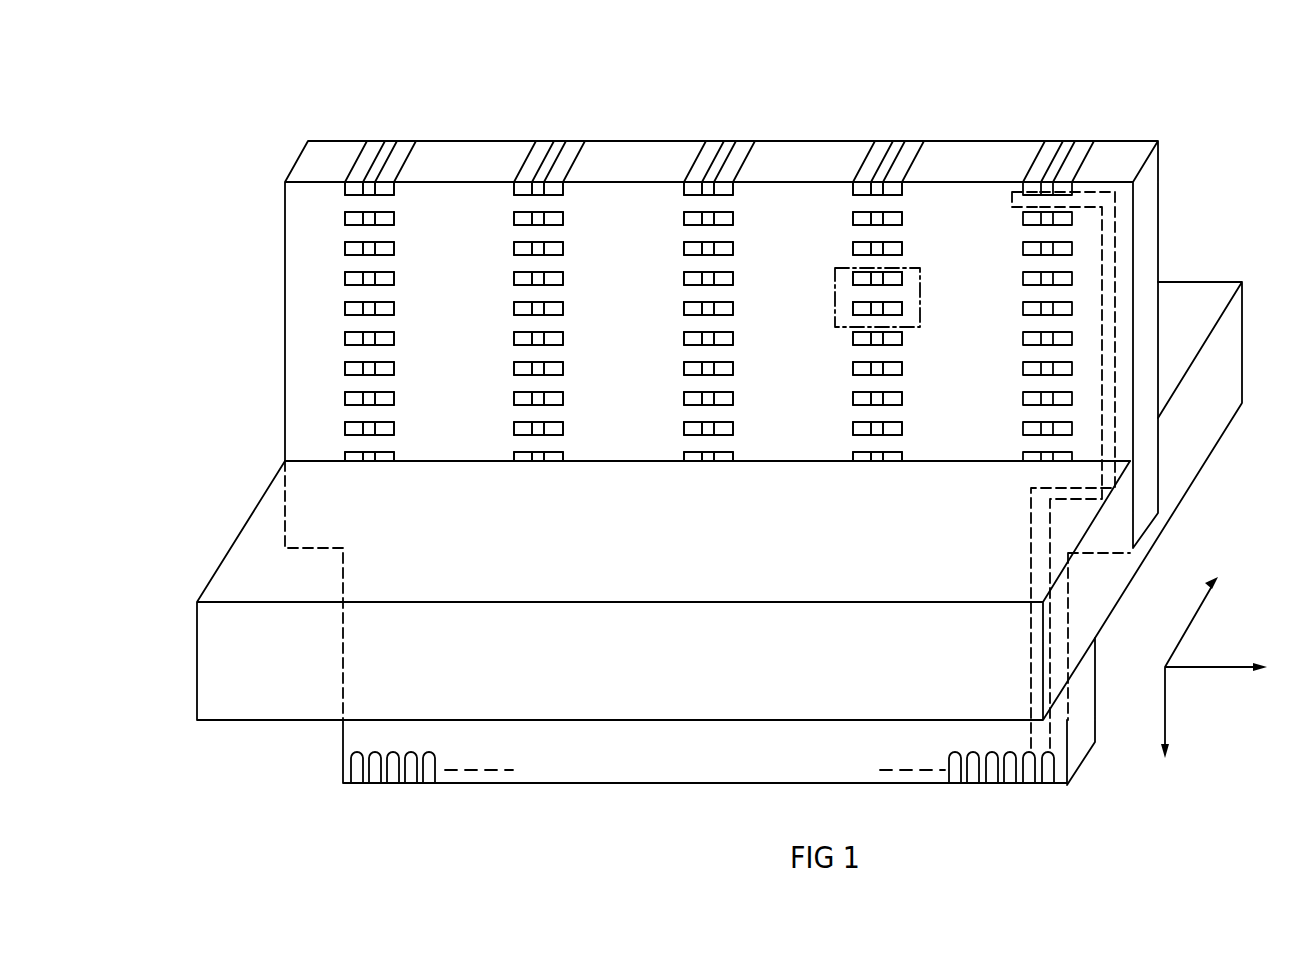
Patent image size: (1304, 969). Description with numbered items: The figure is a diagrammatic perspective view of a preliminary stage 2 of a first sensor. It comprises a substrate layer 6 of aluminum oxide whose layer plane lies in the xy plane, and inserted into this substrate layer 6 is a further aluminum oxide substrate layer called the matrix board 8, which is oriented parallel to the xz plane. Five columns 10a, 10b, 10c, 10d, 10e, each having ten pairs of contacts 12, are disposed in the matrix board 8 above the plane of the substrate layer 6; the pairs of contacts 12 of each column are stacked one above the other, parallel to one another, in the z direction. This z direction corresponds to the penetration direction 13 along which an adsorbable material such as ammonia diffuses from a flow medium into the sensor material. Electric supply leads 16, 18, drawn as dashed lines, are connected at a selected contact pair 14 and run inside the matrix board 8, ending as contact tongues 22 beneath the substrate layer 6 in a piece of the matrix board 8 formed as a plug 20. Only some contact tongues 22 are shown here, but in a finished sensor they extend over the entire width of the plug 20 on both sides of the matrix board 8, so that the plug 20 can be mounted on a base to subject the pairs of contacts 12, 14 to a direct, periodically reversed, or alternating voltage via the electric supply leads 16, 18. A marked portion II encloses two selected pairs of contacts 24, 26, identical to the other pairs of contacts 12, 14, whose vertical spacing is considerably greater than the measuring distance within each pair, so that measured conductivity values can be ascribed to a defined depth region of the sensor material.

The preliminary stage 2 is at (276, 239).
The substrate layer 6 is at (243, 577).
The matrix board 8 is at (310, 327).
The column 10a is at (396, 128).
The column 10b is at (560, 128).
The column 10c is at (730, 128).
The column 10d is at (900, 128).
The column 10e is at (1073, 128).
The pairs of contacts 12 is at (514, 278).
The penetration direction 13 is at (1167, 698).
The selected contact pair 14 is at (1031, 194).
The electric supply lead 16 is at (1104, 227).
The electric supply lead 18 is at (1116, 253).
The plug 20 is at (610, 763).
The contact tongues 22 is at (1047, 783).
The selected pair of contacts 24 is at (850, 281).
The selected pair of contacts 26 is at (850, 311).
The portion II is at (922, 309).